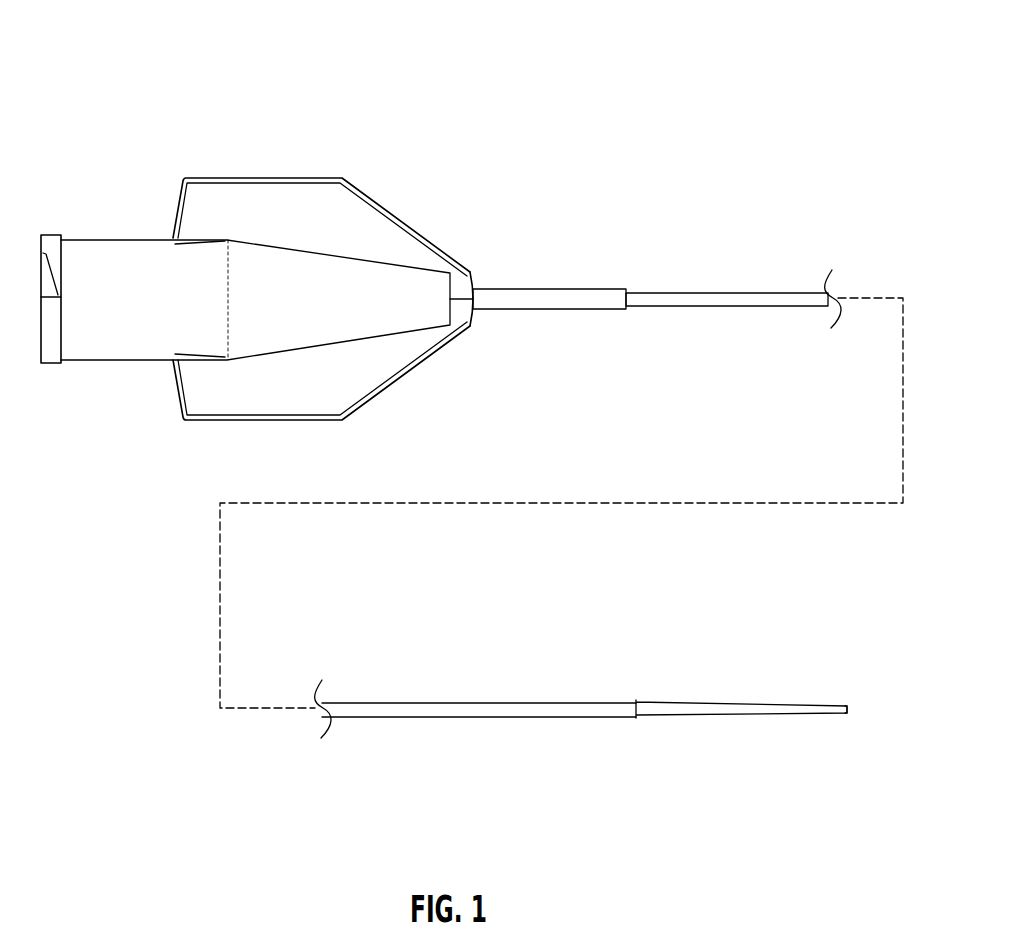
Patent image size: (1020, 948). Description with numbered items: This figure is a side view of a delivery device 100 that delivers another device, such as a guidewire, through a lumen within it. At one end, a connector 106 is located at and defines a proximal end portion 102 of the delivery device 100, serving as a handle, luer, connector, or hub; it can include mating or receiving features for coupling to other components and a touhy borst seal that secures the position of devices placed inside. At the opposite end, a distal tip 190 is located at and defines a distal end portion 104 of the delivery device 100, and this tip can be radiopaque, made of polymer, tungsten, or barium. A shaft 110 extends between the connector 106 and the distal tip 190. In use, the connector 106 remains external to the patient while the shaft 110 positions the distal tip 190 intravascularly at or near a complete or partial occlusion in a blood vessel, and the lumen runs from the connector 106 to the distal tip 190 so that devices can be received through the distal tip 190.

The delivery device 100 is at (98, 50).
The proximal end portion 102 is at (41, 276).
The distal end portion 104 is at (848, 709).
The connector 106 is at (90, 236).
The shaft 110 is at (733, 290).
The distal tip 190 is at (725, 702).